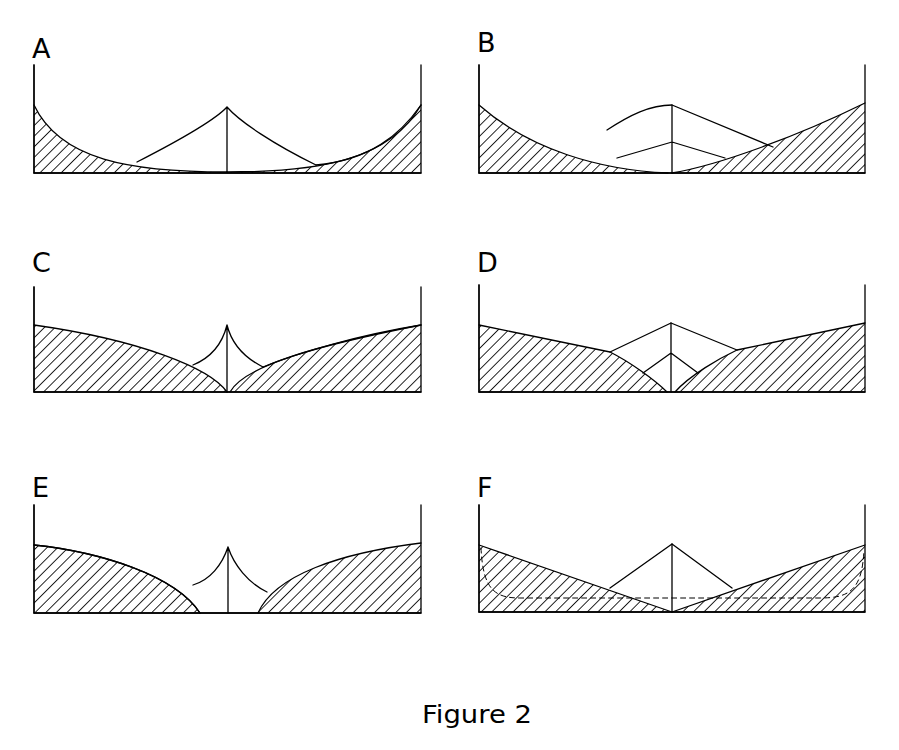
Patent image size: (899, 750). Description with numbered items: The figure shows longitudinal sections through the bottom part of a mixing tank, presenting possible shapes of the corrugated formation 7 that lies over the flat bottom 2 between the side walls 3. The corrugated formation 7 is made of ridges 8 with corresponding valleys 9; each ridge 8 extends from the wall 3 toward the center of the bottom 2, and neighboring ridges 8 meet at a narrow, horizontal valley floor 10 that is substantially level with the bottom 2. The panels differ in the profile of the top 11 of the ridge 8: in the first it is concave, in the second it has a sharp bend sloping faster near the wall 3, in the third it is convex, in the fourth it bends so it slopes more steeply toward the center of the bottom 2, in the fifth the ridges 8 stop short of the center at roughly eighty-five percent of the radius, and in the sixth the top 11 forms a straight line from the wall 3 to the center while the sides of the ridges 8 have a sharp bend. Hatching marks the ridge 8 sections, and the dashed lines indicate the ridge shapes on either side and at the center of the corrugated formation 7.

In FIG. 2A, the bottom 2 is at (45, 176).
In FIG. 2B, the bottom 2 is at (502, 176).
In FIG. 2C, the bottom 2 is at (408, 394).
In FIG. 2D, the bottom 2 is at (843, 394).
In FIG. 2E, the bottom 2 is at (45, 616).
In FIG. 2F, the bottom 2 is at (502, 614).
In FIG. 2A, the wall 3 is at (35, 72).
In FIG. 2B, the wall 3 is at (480, 72).
In FIG. 2C, the wall 3 is at (35, 292).
In FIG. 2D, the wall 3 is at (480, 292).
In FIG. 2E, the wall 3 is at (35, 512).
In FIG. 2F, the wall 3 is at (480, 512).
In FIG. 2A, the corrugated formation 7 is at (286, 133).
In FIG. 2B, the corrugated formation 7 is at (755, 121).
In FIG. 2C, the corrugated formation 7 is at (324, 324).
In FIG. 2D, the corrugated formation 7 is at (731, 325).
In FIG. 2E, the corrugated formation 7 is at (158, 556).
In FIG. 2F, the corrugated formation 7 is at (583, 556).
In FIG. 2A, the ridge 8 is at (218, 138).
In FIG. 2B, the ridge 8 is at (645, 125).
In FIG. 2C, the ridge 8 is at (115, 353).
In FIG. 2D, the ridge 8 is at (652, 342).
In FIG. 2E, the ridge 8 is at (238, 578).
In FIG. 2F, the ridge 8 is at (690, 569).
In FIG. 2A, the valley 9 is at (76, 149).
In FIG. 2B, the valley 9 is at (788, 138).
In FIG. 2C, the valley 9 is at (352, 338).
In FIG. 2D, the valley 9 is at (817, 332).
In FIG. 2E, the valley 9 is at (170, 578).
In FIG. 2F, the valley 9 is at (780, 567).
In FIG. 2A, the valley floor 10 is at (325, 174).
In FIG. 2B, the valley floor 10 is at (555, 174).
In FIG. 2C, the valley floor 10 is at (285, 394).
In FIG. 2D, the valley floor 10 is at (573, 394).
In FIG. 2E, the valley floor 10 is at (320, 614).
In FIG. 2F, the valley floor 10 is at (582, 614).
In FIG. 2A, the top of the ridge 11 is at (388, 139).
In FIG. 2B, the top of the ridge 11 is at (678, 104).
In FIG. 2C, the top of the ridge 11 is at (308, 353).
In FIG. 2D, the top of the ridge 11 is at (677, 325).
In FIG. 2E, the top of the ridge 11 is at (390, 549).
In FIG. 2F, the top of the ridge 11 is at (668, 546).